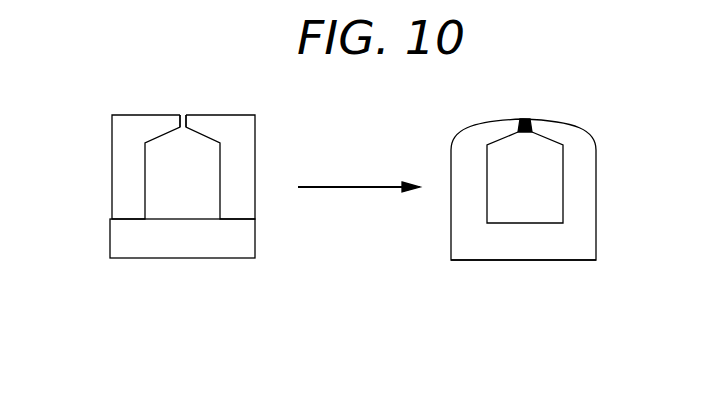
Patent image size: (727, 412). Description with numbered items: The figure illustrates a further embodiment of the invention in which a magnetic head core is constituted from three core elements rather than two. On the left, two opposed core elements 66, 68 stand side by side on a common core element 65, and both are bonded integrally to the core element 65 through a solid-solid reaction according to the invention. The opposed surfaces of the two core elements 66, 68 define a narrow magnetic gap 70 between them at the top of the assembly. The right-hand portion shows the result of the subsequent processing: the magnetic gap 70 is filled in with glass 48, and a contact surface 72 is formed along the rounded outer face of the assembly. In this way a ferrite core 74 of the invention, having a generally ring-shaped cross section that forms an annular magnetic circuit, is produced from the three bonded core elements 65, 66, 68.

The core element 66 is at (122, 163).
The core element 68 is at (244, 163).
The core element 65 is at (183, 252).
The magnetic gap 70 is at (184, 104).
The contact surface 72 is at (560, 122).
The glass 48 is at (527, 135).
The ferrite core 74 is at (500, 273).